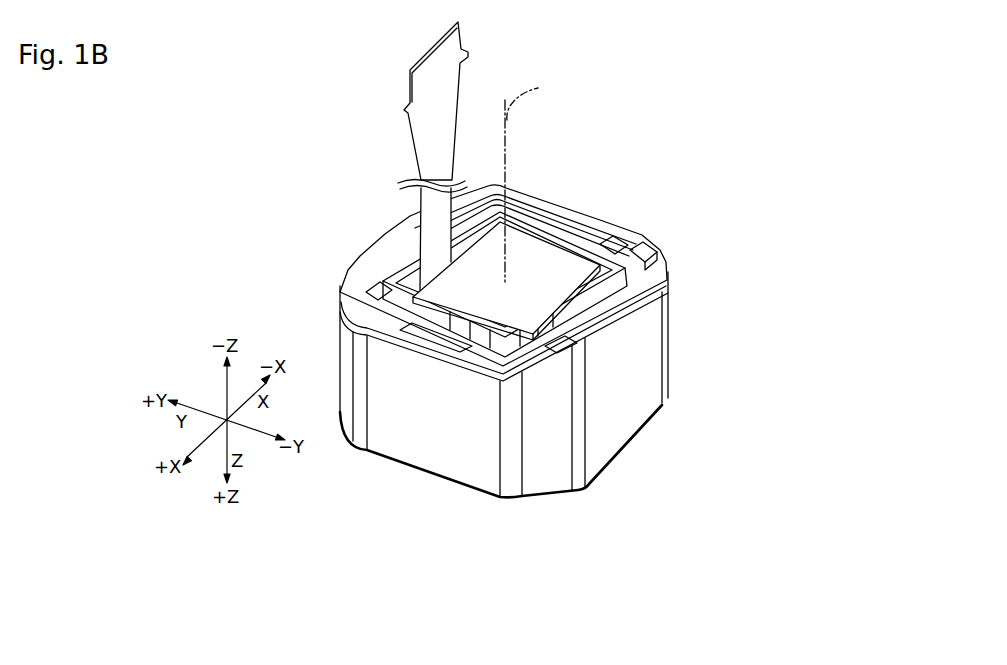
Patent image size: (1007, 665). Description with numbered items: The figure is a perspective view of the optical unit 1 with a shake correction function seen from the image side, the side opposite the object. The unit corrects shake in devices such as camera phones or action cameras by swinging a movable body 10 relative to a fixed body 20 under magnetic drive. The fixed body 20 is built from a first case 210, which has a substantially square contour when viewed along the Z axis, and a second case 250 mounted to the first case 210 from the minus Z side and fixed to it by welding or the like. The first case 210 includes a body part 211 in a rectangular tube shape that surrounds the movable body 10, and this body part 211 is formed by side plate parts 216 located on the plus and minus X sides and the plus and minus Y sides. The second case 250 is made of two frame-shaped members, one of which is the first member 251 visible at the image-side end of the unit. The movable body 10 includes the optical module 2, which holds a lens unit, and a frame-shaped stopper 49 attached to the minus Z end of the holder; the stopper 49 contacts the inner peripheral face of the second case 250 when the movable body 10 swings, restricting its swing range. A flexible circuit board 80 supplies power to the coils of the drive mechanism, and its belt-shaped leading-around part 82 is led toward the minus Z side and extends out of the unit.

The optical unit with a shake correction function 1 is at (300, 209).
The optical module 2 is at (527, 248).
The movable body 10 is at (640, 280).
The fixed body 20 is at (570, 360).
The stopper 49 is at (615, 248).
The flexible circuit board 80 is at (393, 156).
The leading-around part 82 is at (425, 139).
The first case 210 is at (570, 360).
The body part 211 is at (570, 360).
The side plate part 216 is at (440, 463).
The second case 250 is at (684, 228).
The first member 251 is at (636, 242).